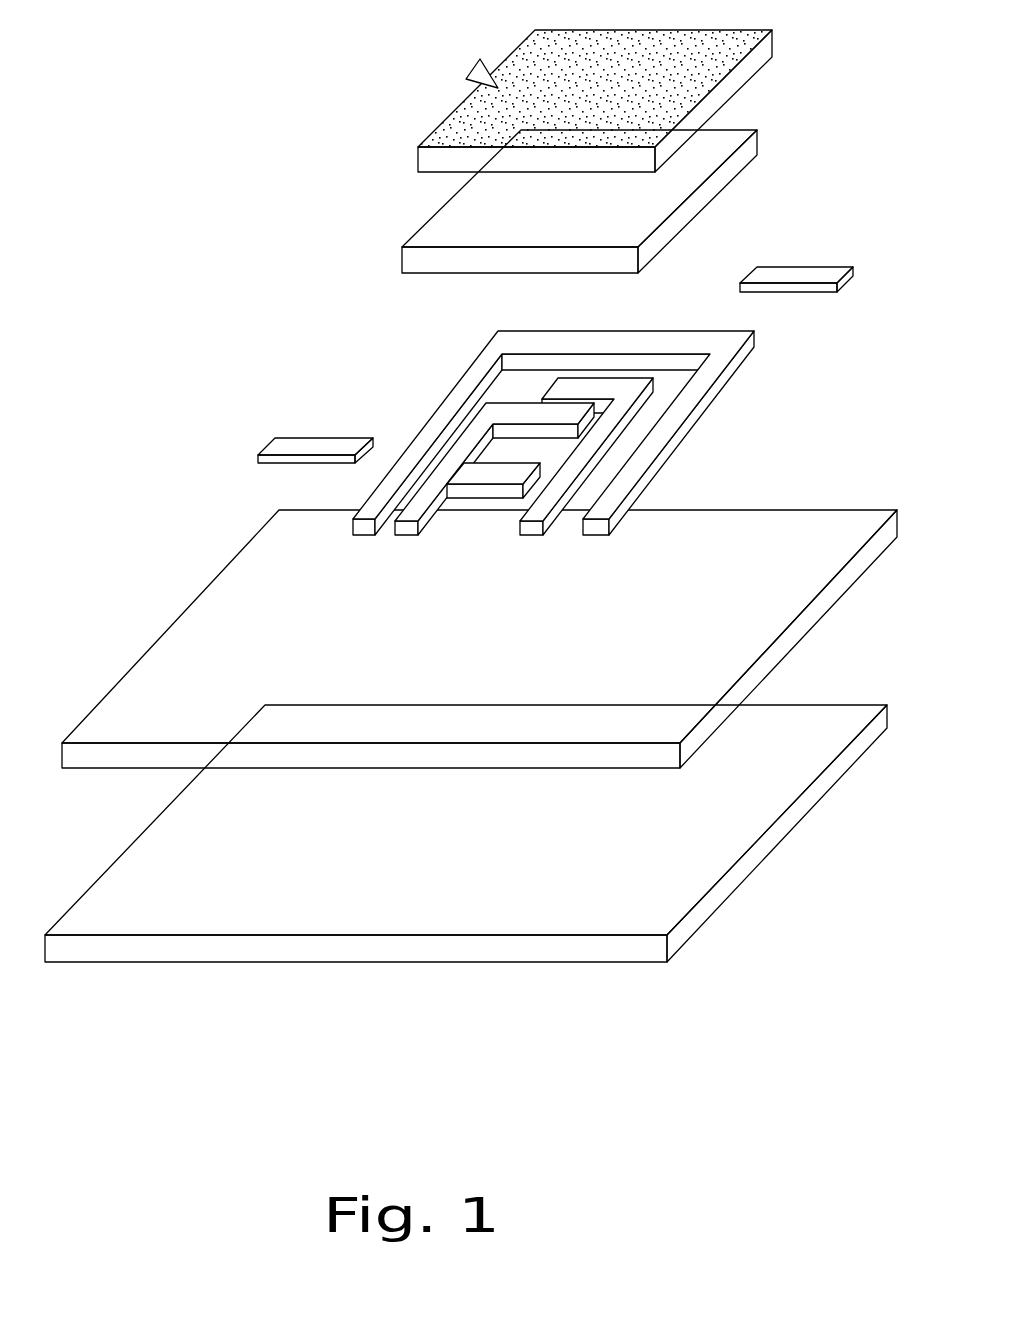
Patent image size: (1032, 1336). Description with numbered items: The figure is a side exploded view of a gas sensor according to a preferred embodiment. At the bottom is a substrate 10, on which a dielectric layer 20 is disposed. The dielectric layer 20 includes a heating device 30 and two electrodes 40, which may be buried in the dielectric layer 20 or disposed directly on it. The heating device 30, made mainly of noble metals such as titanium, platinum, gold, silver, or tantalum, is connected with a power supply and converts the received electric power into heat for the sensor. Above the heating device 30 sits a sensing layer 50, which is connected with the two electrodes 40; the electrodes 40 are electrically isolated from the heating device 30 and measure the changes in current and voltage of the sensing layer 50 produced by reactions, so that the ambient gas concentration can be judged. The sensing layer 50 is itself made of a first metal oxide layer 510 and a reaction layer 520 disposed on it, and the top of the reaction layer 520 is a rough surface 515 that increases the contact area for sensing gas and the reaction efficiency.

The substrate 10 is at (488, 952).
The dielectric layer 20 is at (152, 673).
The heating device 30 is at (455, 398).
The electrodes 40 is at (283, 442).
The sensing layer 50 is at (482, 148).
The first metal oxide layer 510 is at (433, 232).
The rough surface 515 is at (476, 70).
The reaction layer 520 is at (433, 158).